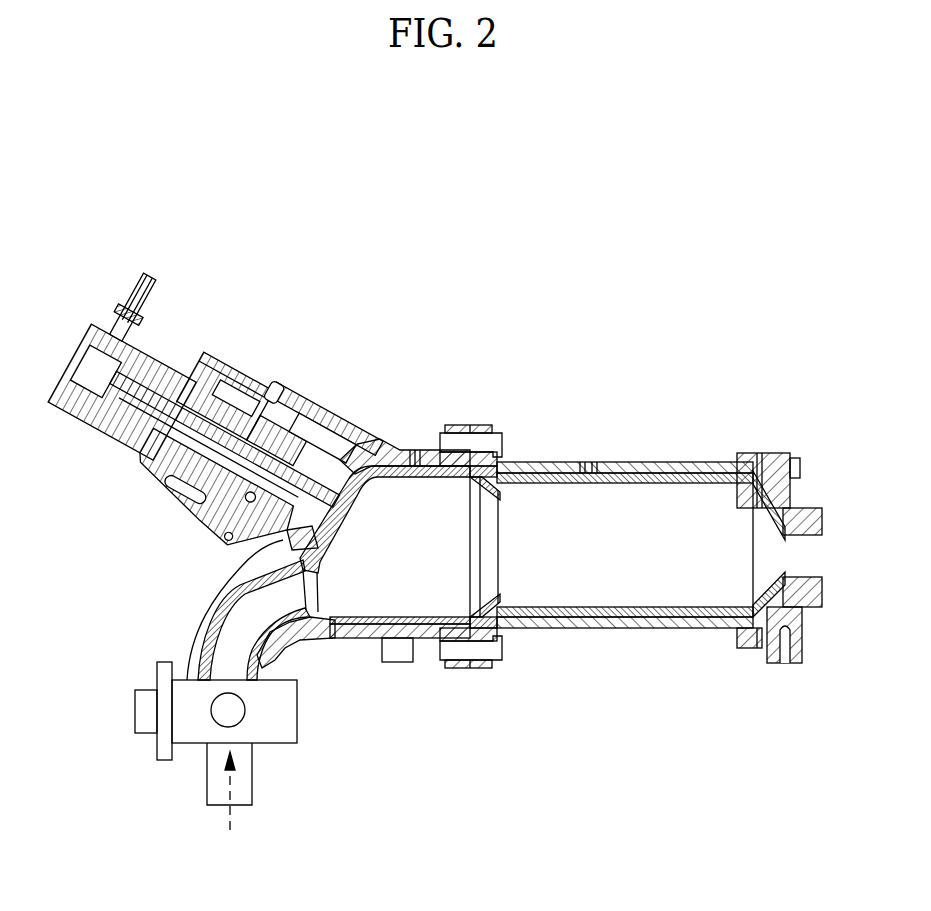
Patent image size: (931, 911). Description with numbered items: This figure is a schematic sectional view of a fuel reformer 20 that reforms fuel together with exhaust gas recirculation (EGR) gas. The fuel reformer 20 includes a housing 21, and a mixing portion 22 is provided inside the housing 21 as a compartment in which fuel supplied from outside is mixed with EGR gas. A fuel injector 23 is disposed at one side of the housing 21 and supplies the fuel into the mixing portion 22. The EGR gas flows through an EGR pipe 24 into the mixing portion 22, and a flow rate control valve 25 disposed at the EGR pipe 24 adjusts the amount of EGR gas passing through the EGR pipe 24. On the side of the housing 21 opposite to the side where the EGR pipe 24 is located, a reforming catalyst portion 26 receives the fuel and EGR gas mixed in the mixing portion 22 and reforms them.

The fuel reformer 20 is at (459, 236).
The housing 21 is at (378, 436).
The mixing portion 22 is at (383, 578).
The fuel injector 23 is at (207, 441).
The EGR pipe 24 is at (192, 618).
The flow rate control valve 25 is at (297, 712).
The reforming catalyst portion 26 is at (559, 583).